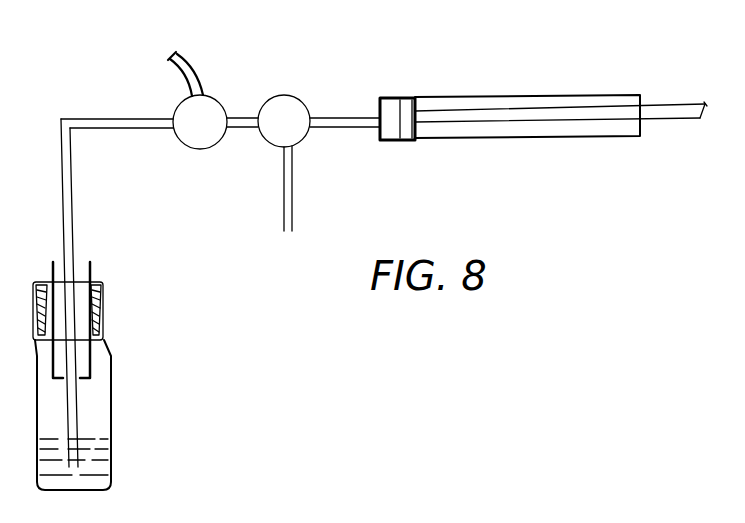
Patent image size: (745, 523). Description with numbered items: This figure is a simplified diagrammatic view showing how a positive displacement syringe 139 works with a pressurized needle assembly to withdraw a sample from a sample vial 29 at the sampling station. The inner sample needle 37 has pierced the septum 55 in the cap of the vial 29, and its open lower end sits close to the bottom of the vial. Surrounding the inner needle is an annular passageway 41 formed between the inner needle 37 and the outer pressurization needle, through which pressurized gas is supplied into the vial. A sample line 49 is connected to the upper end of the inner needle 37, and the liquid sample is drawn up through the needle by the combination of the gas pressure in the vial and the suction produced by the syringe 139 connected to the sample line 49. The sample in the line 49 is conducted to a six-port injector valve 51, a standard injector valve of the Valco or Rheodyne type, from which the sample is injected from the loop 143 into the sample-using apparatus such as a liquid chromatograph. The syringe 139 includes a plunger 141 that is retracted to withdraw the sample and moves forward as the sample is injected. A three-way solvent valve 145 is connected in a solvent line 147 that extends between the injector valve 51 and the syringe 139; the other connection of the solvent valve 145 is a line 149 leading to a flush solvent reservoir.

The sample vial 29 is at (99, 357).
The inner sample needle 37 is at (73, 400).
The annular passageway 41 is at (83, 275).
The sample line 49 is at (133, 118).
The six-port injector valve 51 is at (203, 149).
The septum 55 is at (104, 290).
The syringe 139 is at (487, 137).
The plunger 141 is at (405, 98).
The loop 143 is at (197, 70).
The three-way solvent valve 145 is at (300, 147).
The solvent line 147 is at (243, 118).
The flush solvent line 149 is at (284, 210).